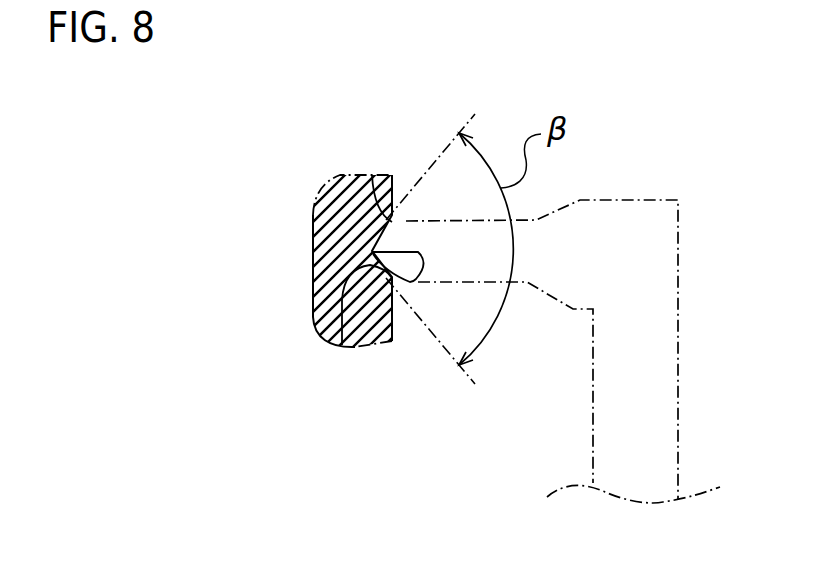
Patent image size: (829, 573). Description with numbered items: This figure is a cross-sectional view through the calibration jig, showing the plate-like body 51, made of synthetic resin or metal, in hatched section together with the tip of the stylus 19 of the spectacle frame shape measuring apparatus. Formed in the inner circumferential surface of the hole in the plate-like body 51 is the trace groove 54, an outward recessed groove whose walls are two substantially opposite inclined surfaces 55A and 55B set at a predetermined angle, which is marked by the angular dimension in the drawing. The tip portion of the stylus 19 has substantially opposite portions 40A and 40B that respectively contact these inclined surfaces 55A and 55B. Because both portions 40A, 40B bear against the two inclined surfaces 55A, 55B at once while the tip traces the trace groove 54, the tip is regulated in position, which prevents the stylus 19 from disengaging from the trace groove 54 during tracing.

The plate-like body 51 is at (316, 256).
The opposite portion of the tip portion of the stylus 40A is at (372, 175).
The opposite portion of the tip portion of the stylus 40B is at (342, 345).
The inclined surface 55A is at (402, 222).
The inclined surface 55B is at (398, 286).
The trace groove 54 is at (412, 282).
The stylus 19 is at (637, 200).